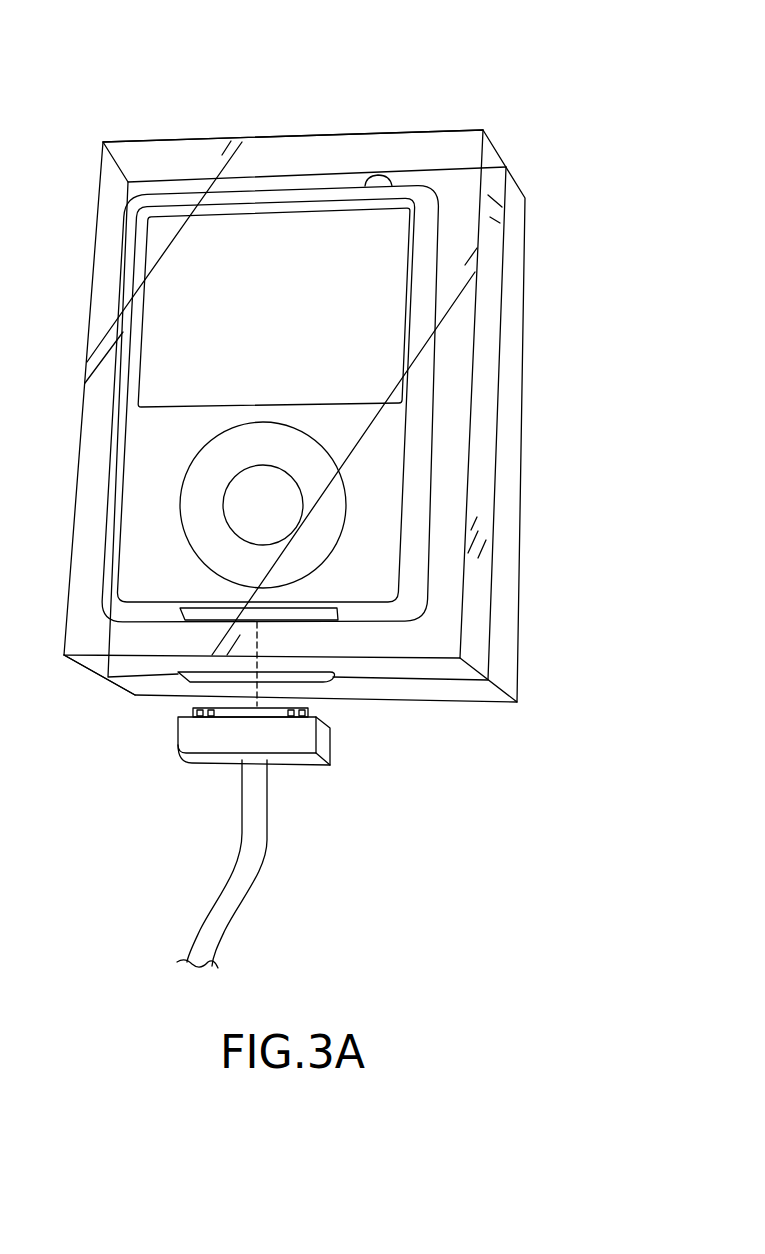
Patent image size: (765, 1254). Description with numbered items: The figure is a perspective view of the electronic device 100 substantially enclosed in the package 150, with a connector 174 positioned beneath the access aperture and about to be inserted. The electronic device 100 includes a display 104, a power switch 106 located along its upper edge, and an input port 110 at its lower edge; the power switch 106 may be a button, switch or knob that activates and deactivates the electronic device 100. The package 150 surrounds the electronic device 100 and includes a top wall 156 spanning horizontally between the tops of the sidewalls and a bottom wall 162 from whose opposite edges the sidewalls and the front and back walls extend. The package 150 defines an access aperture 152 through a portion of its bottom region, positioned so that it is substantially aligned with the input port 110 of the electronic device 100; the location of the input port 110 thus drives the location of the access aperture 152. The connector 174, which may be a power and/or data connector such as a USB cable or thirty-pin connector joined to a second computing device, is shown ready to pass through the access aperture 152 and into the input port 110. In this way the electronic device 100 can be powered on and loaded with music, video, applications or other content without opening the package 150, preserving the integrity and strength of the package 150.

The electronic device 100 is at (433, 217).
The display 104 is at (398, 307).
The power switch 106 is at (384, 176).
The input port 110 is at (313, 621).
The package 150 is at (520, 468).
The access aperture 152 is at (325, 682).
The top wall 156 is at (290, 148).
The bottom wall 162 is at (137, 693).
The connector 174 is at (268, 842).